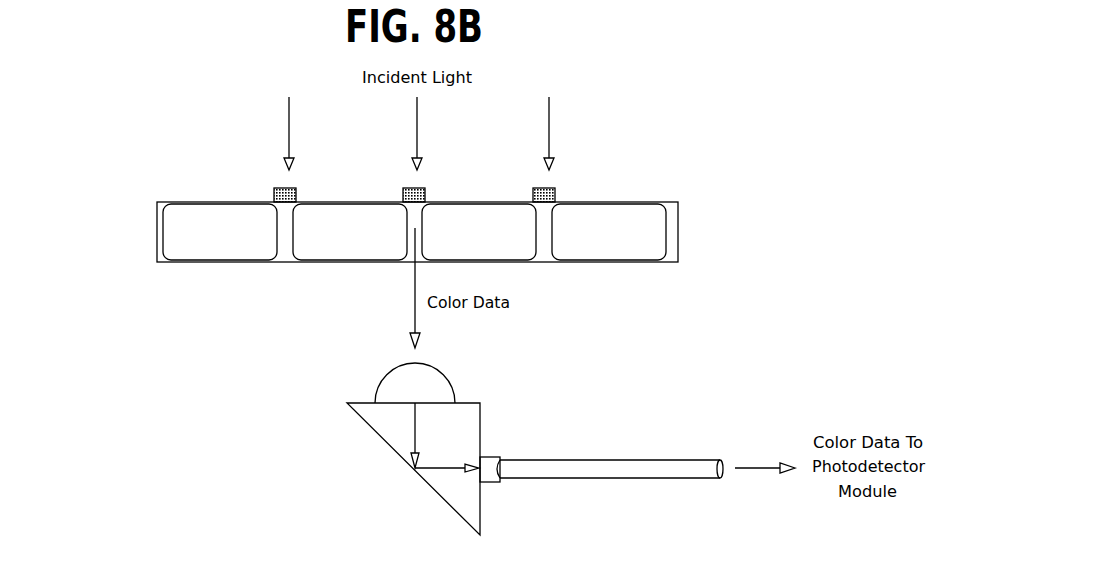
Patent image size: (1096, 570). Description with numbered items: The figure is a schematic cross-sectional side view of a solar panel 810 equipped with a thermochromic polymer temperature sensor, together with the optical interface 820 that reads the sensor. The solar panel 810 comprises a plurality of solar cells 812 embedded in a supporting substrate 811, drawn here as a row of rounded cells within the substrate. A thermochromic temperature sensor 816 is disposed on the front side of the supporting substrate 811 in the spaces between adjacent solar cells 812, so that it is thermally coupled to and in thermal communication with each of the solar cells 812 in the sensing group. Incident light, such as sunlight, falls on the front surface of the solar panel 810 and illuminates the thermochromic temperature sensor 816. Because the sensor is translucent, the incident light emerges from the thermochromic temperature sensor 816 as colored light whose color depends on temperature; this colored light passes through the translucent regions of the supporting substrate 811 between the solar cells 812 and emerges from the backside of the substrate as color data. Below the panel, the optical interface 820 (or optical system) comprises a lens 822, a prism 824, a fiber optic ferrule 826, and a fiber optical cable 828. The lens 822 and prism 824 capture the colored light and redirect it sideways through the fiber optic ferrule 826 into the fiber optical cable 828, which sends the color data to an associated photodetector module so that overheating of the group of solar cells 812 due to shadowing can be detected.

The solar panel 810 is at (368, 208).
The supporting substrate 811 is at (157, 234).
The solar cells 812 is at (213, 202).
The thermochromic temperature sensor 816 is at (284, 188).
The optical interface 820 is at (535, 426).
The lens 822 is at (440, 370).
The prism 824 is at (482, 413).
The fiber optic ferrule 826 is at (498, 455).
The fiber optical cable 828 is at (610, 451).